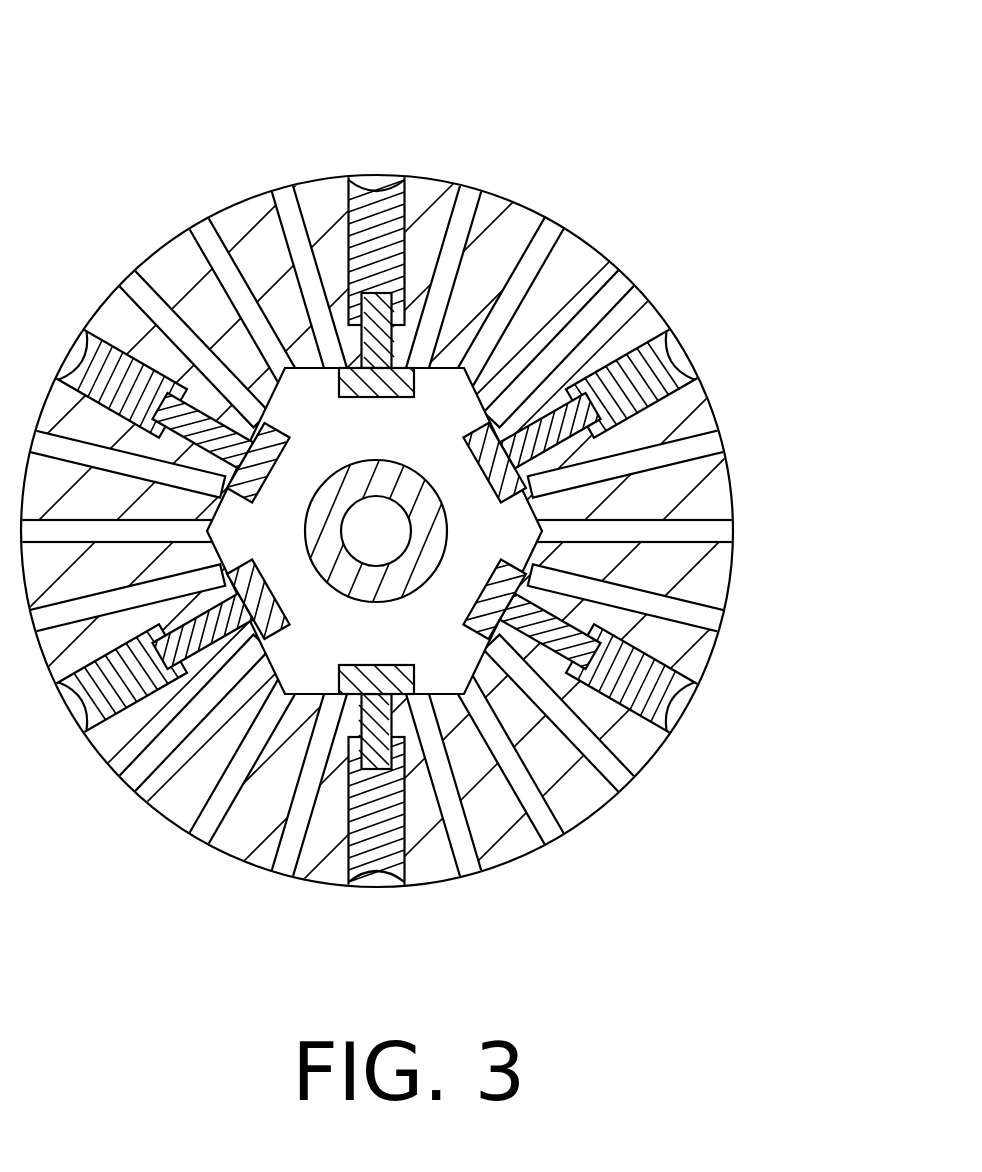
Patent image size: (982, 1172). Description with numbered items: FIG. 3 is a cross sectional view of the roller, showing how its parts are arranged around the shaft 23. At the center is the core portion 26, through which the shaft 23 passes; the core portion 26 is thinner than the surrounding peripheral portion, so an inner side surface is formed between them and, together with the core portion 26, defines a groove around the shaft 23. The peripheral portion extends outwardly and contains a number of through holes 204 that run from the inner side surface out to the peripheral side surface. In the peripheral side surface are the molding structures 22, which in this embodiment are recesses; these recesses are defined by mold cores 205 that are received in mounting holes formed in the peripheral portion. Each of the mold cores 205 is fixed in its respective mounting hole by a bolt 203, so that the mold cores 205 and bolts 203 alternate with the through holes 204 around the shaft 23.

The molding structures 22 is at (378, 190).
The shaft 23 is at (427, 545).
The core portion 26 is at (307, 400).
The bolt 203 is at (528, 440).
The through holes 204 is at (697, 447).
The mold cores 205 is at (650, 378).